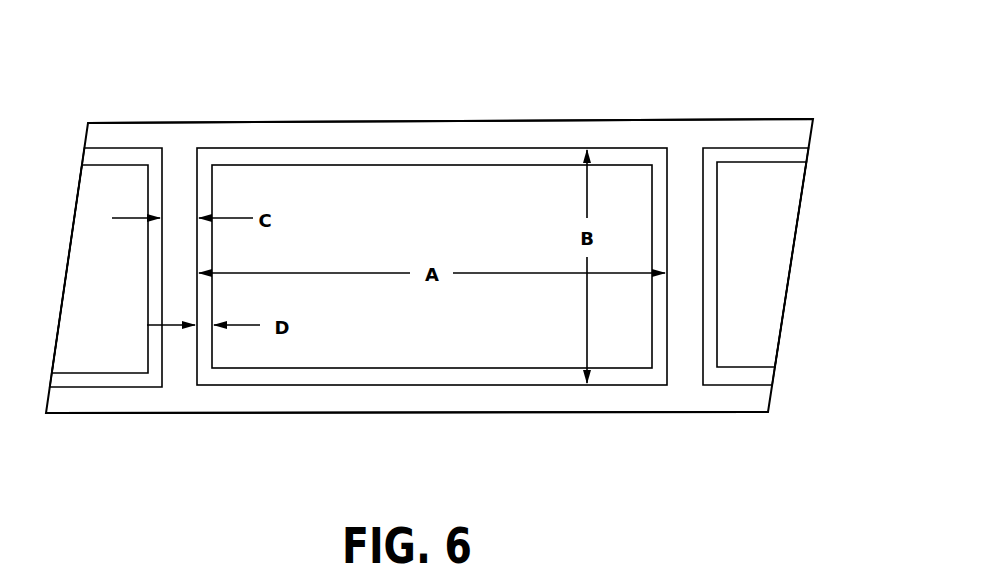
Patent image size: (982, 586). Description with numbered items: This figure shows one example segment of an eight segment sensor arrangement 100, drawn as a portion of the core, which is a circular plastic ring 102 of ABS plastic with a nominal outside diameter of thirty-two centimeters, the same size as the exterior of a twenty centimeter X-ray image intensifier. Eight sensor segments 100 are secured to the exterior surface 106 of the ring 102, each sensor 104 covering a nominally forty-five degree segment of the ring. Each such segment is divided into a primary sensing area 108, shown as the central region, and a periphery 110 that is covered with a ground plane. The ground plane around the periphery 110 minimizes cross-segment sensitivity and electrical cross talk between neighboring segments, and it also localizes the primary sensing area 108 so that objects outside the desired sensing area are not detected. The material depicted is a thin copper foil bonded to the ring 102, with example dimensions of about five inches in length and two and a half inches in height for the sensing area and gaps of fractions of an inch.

The sensor segment 100 is at (694, 106).
The ring 102 is at (414, 126).
The sensor 104 is at (128, 158).
The exterior surface 106 is at (517, 413).
The primary sensing area 108 is at (515, 182).
The periphery 110 is at (342, 385).